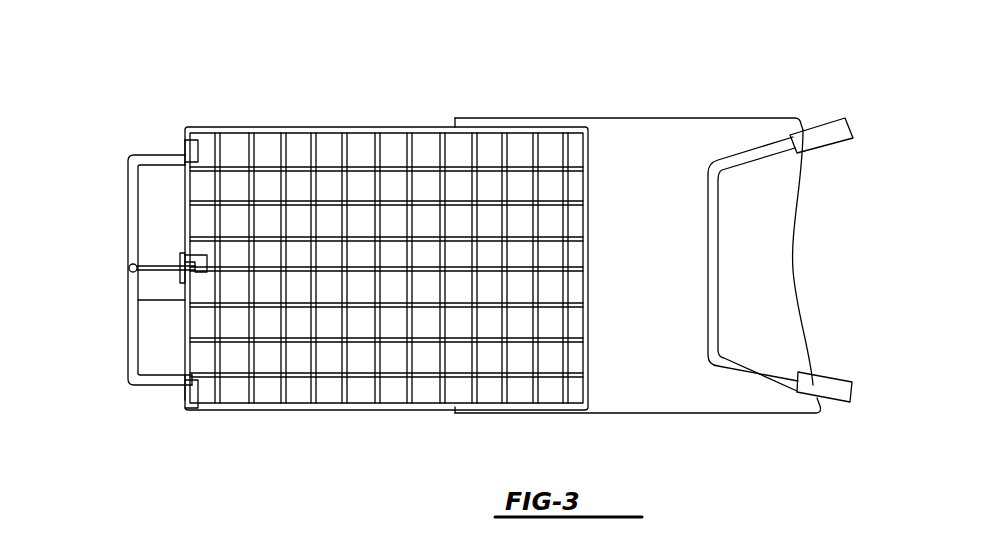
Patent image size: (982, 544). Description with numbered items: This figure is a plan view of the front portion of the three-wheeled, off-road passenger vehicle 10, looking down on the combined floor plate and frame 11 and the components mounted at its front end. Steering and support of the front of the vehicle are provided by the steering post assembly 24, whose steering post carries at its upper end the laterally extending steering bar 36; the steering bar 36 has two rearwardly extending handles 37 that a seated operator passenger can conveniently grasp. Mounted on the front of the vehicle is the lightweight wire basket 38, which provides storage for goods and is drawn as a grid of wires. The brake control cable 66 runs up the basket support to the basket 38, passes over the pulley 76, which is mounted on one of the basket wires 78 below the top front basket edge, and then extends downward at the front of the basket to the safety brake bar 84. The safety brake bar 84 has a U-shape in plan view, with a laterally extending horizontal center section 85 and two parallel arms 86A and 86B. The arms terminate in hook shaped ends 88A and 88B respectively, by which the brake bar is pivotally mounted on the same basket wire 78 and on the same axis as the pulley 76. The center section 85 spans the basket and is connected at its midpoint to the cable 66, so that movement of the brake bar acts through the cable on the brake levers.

The three-wheeled off-road passenger vehicle 10 is at (662, 206).
The combined floor plate and frame 11 is at (668, 135).
The steering post assembly 24 is at (690, 235).
The steering bar 36 is at (715, 222).
The handles 37 is at (825, 130).
The wire basket 38 is at (302, 127).
The cable 66 is at (160, 272).
The pulley 76 is at (185, 245).
The basket wire 78 is at (185, 318).
The safety brake bar 84 is at (158, 268).
The center section 85 is at (128, 192).
The arm 86A is at (165, 388).
The arm 86B is at (160, 155).
The hook shaped end 88A is at (195, 385).
The hook shaped end 88B is at (190, 160).